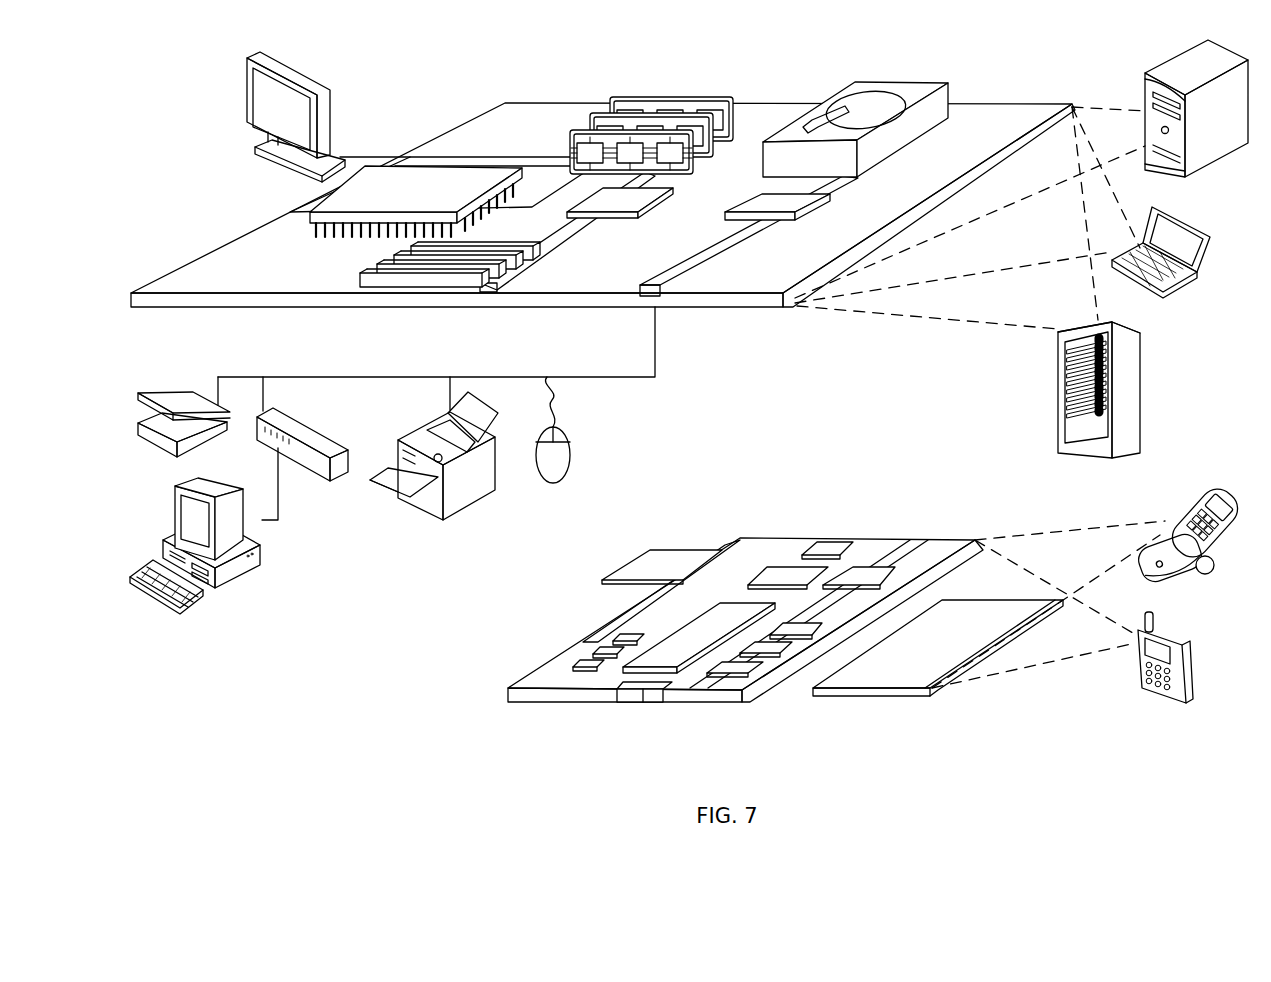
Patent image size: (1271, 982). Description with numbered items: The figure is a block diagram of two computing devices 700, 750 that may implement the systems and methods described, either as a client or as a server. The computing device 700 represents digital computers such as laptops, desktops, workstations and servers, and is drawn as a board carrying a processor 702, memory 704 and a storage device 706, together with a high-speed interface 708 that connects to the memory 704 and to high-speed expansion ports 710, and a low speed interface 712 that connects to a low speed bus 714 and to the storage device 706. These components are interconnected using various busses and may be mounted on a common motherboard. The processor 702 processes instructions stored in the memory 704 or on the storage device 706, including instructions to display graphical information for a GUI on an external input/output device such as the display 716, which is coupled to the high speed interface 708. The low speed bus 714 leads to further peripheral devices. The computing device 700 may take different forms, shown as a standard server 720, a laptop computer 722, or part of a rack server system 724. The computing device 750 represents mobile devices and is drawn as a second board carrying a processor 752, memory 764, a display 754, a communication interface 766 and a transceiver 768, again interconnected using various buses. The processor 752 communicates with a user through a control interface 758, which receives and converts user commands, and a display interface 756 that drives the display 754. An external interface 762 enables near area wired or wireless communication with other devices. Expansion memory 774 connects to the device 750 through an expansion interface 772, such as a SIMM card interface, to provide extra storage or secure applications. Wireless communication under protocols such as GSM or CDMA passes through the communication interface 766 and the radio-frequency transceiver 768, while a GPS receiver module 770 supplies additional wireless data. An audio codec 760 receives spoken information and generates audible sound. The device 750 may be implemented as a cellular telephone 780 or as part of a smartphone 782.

The computing device 700 is at (432, 78).
The processor 702 is at (318, 216).
The memory 704 is at (620, 95).
The storage device 706 is at (853, 83).
The high-speed interface 708 is at (570, 165).
The high-speed expansion ports 710 is at (370, 268).
The low speed interface 712 is at (762, 205).
The low speed bus 714 is at (665, 295).
The display 716 is at (249, 56).
The standard server 720 is at (1146, 85).
The laptop computer 722 is at (1211, 234).
The rack server system 724 is at (1058, 414).
The computing device 750 is at (480, 700).
The processor 752 is at (675, 662).
The display 754 is at (900, 678).
The display interface 756 is at (753, 680).
The control interface 758 is at (765, 658).
The audio codec 760 is at (793, 638).
The external interface 762 is at (643, 703).
The memory 764 is at (593, 653).
The communication interface 766 is at (788, 573).
The transceiver 768 is at (862, 573).
The GPS receiver module 770 is at (835, 542).
The expansion interface 772 is at (722, 550).
The expansion memory 774 is at (650, 553).
The cellular telephone 780 is at (1192, 497).
The smartphone 782 is at (1138, 670).